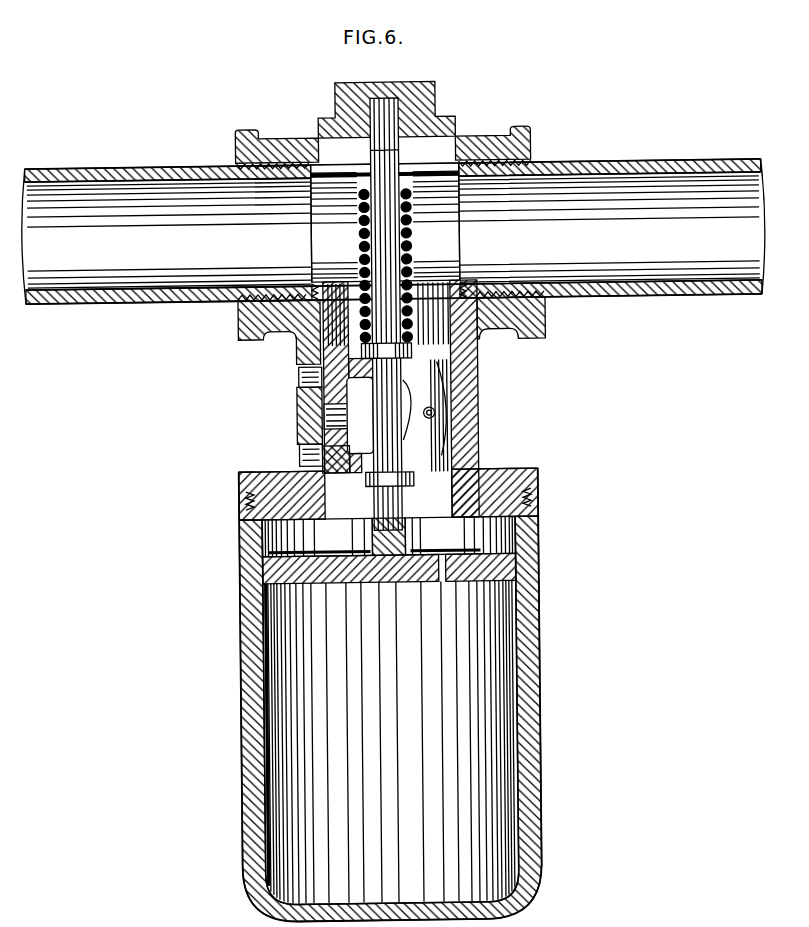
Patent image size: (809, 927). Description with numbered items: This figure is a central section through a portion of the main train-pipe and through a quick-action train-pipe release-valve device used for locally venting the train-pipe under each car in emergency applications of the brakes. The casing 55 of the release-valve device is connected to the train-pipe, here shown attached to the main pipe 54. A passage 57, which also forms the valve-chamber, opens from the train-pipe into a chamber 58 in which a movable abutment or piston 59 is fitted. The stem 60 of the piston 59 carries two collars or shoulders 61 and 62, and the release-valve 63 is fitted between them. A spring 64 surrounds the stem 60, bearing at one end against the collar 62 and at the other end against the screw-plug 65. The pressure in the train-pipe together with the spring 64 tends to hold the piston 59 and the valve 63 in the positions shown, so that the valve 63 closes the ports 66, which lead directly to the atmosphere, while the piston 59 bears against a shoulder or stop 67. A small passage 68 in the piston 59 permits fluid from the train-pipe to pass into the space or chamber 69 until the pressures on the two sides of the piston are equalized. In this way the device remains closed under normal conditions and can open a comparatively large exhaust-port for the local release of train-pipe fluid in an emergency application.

The main pipe 54 is at (393, 231).
The casing 55 is at (468, 390).
The passage 57 is at (409, 333).
The chamber 58 is at (460, 535).
The piston 59 is at (342, 578).
The stem 60 is at (383, 437).
The collar 61 is at (408, 486).
The collar 62 is at (432, 407).
The release-valve 63 is at (338, 460).
The spring 64 is at (413, 247).
The screw-plug 65 is at (356, 112).
The ports 66 is at (300, 382).
The stop 67 is at (262, 584).
The small passage 68 is at (441, 583).
The chamber 69 is at (390, 741).